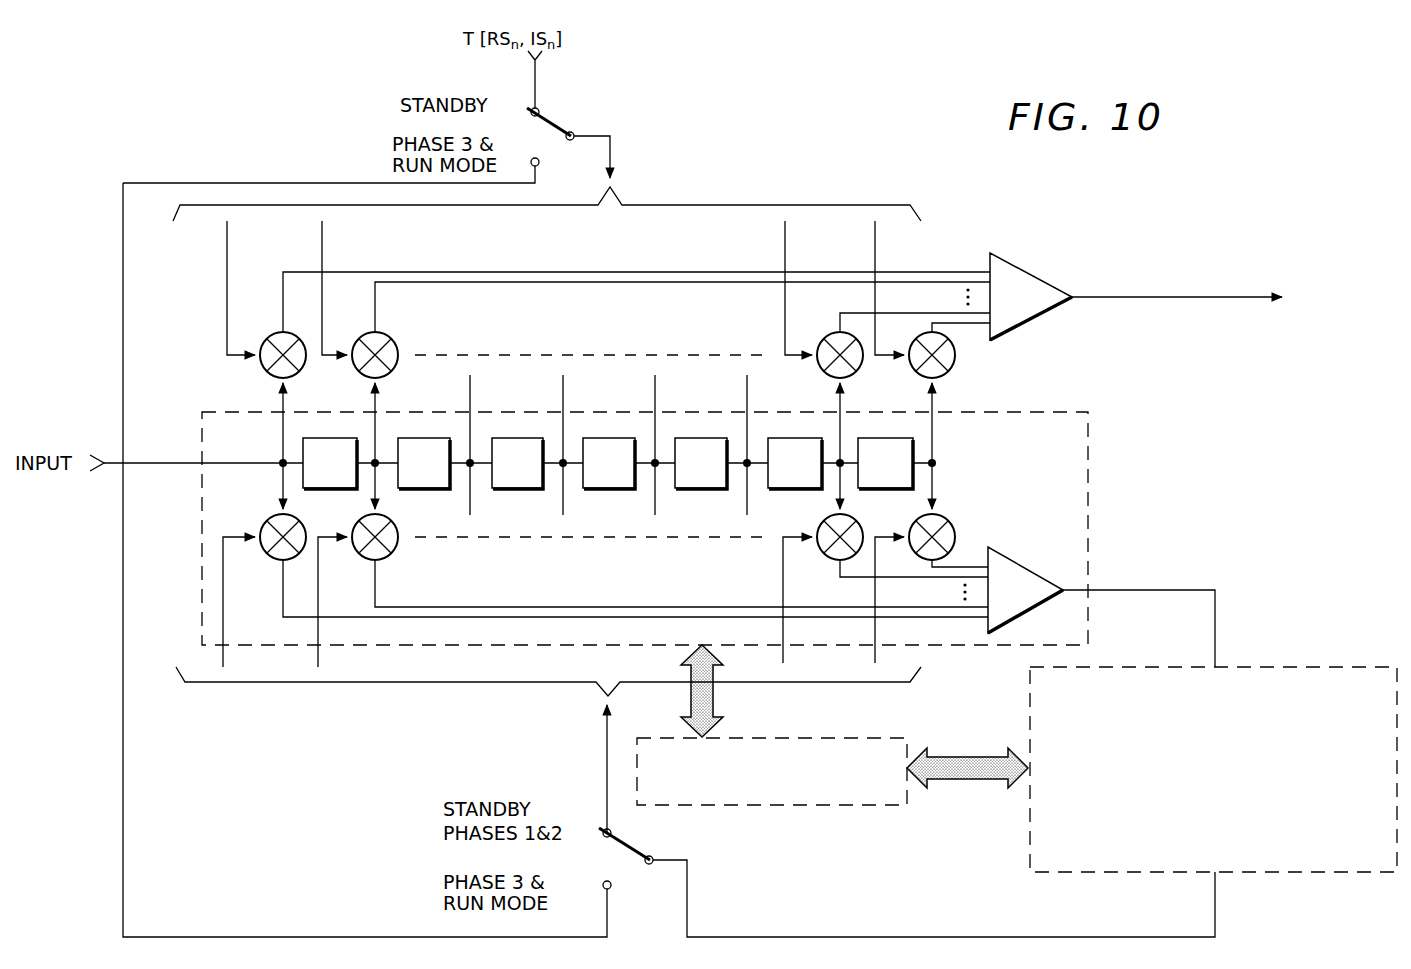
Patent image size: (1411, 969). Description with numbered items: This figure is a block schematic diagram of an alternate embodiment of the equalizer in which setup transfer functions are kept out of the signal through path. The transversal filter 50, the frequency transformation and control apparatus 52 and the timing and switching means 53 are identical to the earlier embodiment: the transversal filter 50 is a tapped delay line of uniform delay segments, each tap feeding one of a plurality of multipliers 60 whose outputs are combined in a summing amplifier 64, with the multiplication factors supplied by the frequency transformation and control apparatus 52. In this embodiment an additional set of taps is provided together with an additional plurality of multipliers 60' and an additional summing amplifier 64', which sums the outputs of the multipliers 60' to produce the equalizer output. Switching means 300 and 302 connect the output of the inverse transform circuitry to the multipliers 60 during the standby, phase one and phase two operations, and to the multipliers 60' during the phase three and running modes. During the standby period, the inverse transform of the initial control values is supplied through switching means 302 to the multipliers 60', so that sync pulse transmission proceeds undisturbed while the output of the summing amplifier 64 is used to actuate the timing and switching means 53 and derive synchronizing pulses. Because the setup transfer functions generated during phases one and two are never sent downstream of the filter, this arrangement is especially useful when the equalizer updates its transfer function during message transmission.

The transversal filter 50 is at (1090, 476).
The frequency transformation and control apparatus 52 is at (1312, 667).
The timing and switching means 53 is at (820, 738).
The multipliers 60 is at (606, 582).
The additional multipliers 60' is at (616, 305).
The summing amplifier 64 is at (1089, 602).
The additional summing amplifier 64' is at (1169, 291).
The switching means 300 is at (628, 846).
The switching means 302 is at (555, 122).